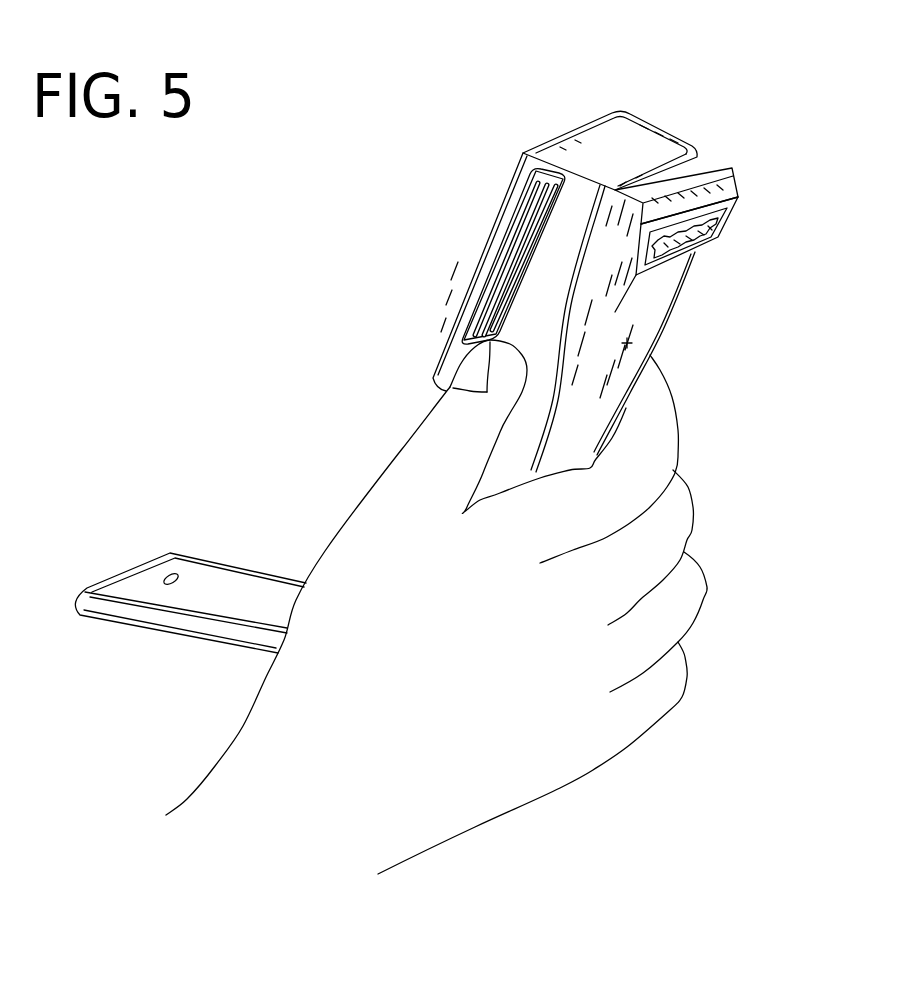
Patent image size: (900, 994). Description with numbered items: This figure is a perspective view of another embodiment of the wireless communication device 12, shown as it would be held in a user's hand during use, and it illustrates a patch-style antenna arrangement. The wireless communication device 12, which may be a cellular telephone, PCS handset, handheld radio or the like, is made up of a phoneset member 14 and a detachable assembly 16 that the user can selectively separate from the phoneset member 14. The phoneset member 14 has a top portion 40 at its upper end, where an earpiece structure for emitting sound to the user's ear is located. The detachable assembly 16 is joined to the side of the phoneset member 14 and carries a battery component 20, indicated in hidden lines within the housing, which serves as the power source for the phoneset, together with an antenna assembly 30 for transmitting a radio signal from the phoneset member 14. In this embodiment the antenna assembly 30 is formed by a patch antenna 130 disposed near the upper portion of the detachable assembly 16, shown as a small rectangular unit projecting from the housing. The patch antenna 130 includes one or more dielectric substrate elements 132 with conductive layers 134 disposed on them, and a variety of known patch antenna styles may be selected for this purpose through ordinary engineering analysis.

The wireless communication device 12 is at (420, 237).
The phoneset member 14 is at (590, 123).
The top portion 40 is at (628, 142).
The detachable assembly 16 is at (680, 177).
The antenna assembly 30 is at (766, 257).
The patch antenna 130 is at (720, 194).
The dielectric substrate element 132 is at (723, 214).
The conductive layer 134 is at (673, 243).
The battery component 20 is at (627, 343).